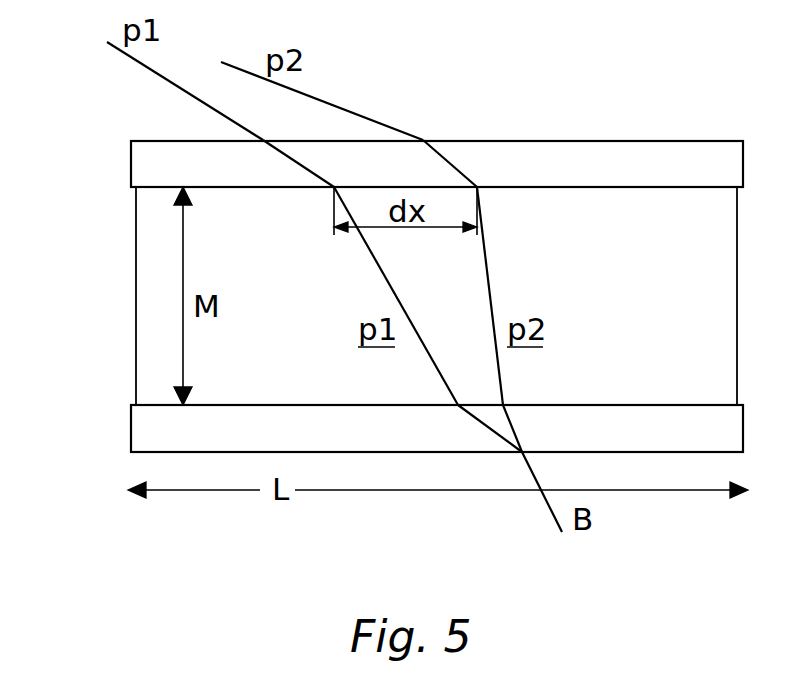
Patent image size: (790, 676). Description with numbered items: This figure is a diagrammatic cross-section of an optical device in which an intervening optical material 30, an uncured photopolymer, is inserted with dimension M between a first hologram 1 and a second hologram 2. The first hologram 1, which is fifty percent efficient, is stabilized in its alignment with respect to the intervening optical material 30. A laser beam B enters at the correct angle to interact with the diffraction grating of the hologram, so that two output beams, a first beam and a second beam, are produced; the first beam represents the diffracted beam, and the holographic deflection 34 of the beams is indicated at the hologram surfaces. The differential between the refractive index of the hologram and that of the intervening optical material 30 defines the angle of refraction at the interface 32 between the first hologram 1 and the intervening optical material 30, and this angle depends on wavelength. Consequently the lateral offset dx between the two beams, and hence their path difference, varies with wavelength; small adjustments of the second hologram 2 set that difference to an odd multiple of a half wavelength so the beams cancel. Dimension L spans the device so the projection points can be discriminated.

The first hologram 1 is at (147, 425).
The second hologram 2 is at (143, 165).
The intervening optical material 30 is at (153, 310).
The interface 32 is at (317, 403).
The holographic deflection 34 is at (473, 151).